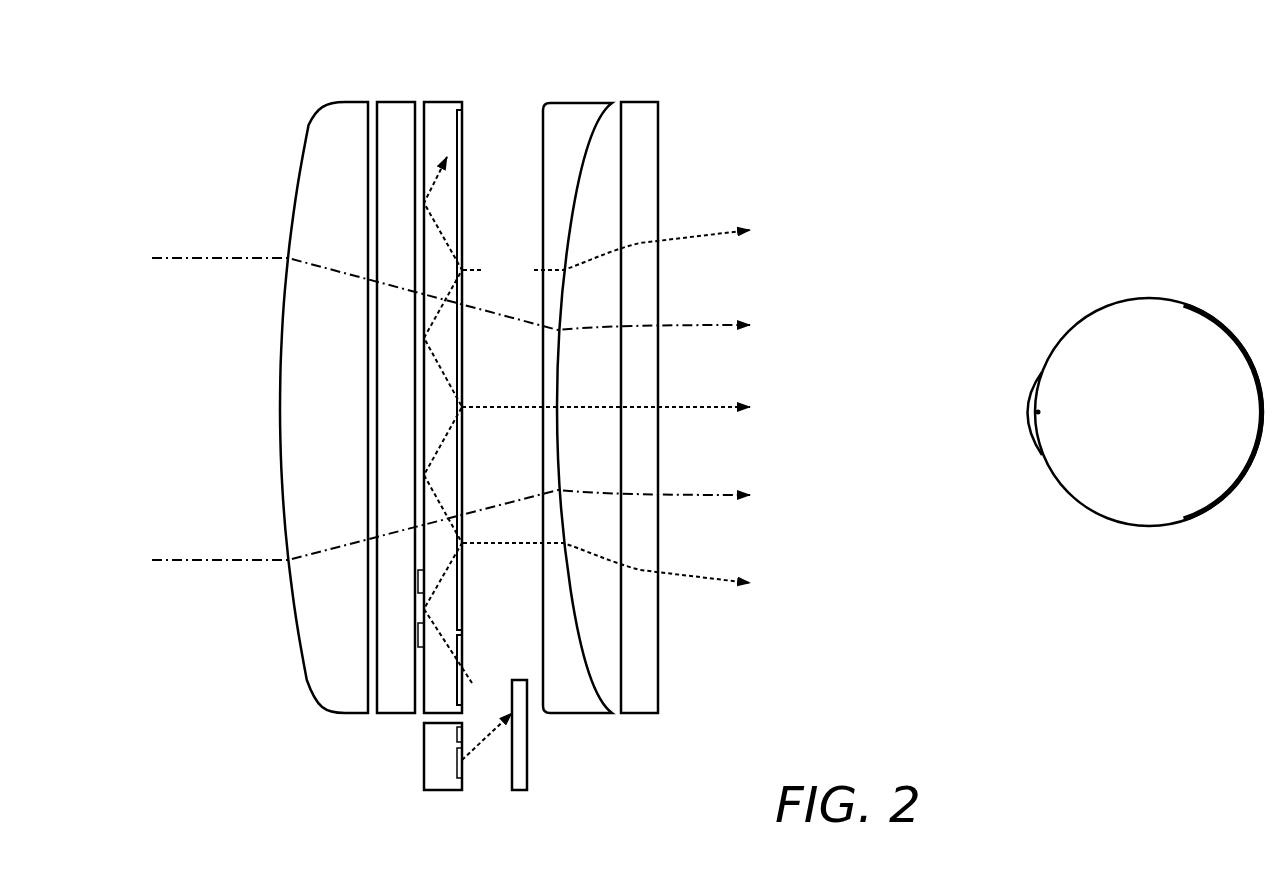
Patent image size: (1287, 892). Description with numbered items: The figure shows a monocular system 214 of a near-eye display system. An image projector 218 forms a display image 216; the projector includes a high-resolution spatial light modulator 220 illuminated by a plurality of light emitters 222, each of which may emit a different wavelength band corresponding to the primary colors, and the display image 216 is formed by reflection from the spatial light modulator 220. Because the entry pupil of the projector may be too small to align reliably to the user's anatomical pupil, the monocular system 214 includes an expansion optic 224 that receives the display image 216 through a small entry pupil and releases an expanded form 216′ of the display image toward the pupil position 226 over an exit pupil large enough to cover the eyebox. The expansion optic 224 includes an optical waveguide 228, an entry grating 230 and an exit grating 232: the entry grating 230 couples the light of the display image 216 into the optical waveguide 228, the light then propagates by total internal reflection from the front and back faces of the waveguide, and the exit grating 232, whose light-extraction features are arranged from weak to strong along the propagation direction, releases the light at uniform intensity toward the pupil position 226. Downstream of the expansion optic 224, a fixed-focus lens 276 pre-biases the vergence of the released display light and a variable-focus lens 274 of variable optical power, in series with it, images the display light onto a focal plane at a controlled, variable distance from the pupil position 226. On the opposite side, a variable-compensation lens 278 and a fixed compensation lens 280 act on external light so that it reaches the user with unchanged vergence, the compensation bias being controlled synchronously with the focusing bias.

The monocular system 214 is at (147, 128).
The fixed compensation lens 280 is at (349, 102).
The variable-compensation lens 278 is at (398, 102).
The optical waveguide 228 is at (443, 102).
The exit grating 232 is at (463, 170).
The entry grating 230 is at (463, 648).
The expansion optic 224 is at (474, 122).
The fixed-focus lens 276 is at (575, 102).
The variable-focus lens 274 is at (648, 102).
The image projector 218 is at (508, 805).
The light emitters 222 is at (460, 734).
The spatial light modulator 220 is at (528, 727).
The display image 216 is at (468, 458).
The expanded form of the display image 216′ is at (606, 256).
The pupil position 226 is at (1045, 414).